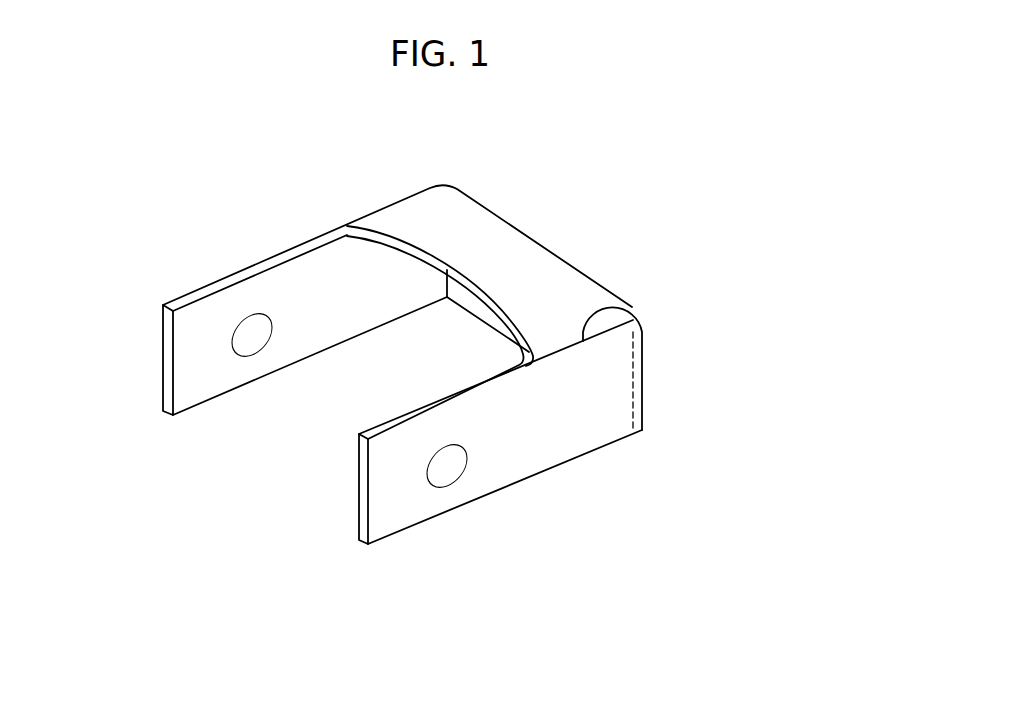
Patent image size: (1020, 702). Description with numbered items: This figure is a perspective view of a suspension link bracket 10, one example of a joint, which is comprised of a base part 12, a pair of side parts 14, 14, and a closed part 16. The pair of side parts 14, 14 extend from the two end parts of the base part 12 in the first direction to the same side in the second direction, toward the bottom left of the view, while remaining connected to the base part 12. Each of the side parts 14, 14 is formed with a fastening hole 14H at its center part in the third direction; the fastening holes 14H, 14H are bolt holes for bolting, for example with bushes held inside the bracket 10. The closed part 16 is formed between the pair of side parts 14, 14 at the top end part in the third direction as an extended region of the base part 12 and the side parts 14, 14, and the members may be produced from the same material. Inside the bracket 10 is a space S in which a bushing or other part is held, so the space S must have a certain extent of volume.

The suspension link bracket 10 is at (404, 182).
The base part 12 is at (453, 293).
The side part 14 is at (190, 392).
The fastening hole 14H is at (252, 328).
The closed part 16 is at (495, 276).
The space S is at (340, 421).